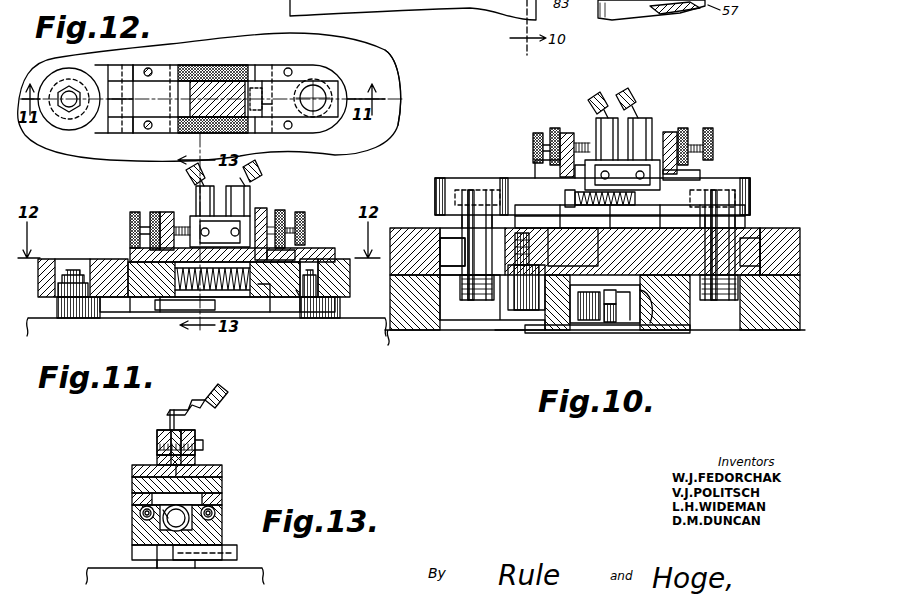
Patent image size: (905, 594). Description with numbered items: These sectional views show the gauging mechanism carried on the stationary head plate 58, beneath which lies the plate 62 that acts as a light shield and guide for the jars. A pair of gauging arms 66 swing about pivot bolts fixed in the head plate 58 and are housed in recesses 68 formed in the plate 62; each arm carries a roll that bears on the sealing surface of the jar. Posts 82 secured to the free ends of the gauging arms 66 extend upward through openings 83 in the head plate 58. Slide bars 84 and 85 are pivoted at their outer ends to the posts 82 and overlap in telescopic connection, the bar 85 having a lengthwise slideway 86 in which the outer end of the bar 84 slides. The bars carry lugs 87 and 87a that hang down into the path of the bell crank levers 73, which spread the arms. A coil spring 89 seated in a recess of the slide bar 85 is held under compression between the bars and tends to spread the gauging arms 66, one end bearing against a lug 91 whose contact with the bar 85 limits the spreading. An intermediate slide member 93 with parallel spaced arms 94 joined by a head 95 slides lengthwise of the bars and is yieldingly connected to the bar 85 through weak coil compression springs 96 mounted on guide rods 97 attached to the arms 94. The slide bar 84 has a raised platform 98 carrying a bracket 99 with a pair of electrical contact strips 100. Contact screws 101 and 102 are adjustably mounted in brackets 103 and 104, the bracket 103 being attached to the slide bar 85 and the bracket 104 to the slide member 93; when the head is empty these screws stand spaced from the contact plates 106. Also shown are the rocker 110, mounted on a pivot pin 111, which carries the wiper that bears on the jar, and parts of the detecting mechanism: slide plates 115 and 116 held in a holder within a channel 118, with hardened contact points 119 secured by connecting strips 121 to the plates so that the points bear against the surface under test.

In FIG. 12, the head plate 58 is at (392, 88).
In FIG. 10, the head plate 58 is at (782, 245).
In FIG. 10, the plate 62 is at (778, 322).
In FIG. 10, the gauging arm 66 is at (470, 305).
In FIG. 10, the recess 68 is at (485, 305).
In FIG. 11, the bell crank lever 73 is at (150, 303).
In FIG. 10, the bell crank lever 73 is at (560, 212).
In FIG. 13, the bell crank lever 73 is at (237, 552).
In FIG. 12, the post 82 is at (328, 90).
In FIG. 11, the post 82 is at (58, 303).
In FIG. 10, the post 82 is at (470, 225).
In FIG. 13, the post 82 is at (178, 560).
In FIG. 10, the opening 83 is at (597, 252).
In FIG. 12, the slide bar 84 is at (57, 122).
In FIG. 11, the slide bar 84 is at (113, 262).
In FIG. 10, the slide bar 84 is at (440, 192).
In FIG. 13, the slide bar 84 is at (135, 477).
In FIG. 12, the slide bar 85 is at (322, 72).
In FIG. 11, the slide bar 85 is at (352, 272).
In FIG. 10, the slide bar 85 is at (752, 195).
In FIG. 13, the slide bar 85 is at (208, 528).
In FIG. 12, the slideway 86 is at (366, 96).
In FIG. 12, the lug 87 is at (130, 99).
In FIG. 11, the lug 87 is at (122, 300).
In FIG. 13, the lug 87 is at (162, 548).
In FIG. 12, the lug 87a is at (264, 73).
In FIG. 11, the lug 87a is at (270, 292).
In FIG. 12, the coil spring 89 is at (250, 99).
In FIG. 11, the coil spring 89 is at (240, 282).
In FIG. 13, the coil spring 89 is at (170, 522).
In FIG. 12, the lug 91 is at (277, 105).
In FIG. 11, the lug 91 is at (287, 296).
In FIG. 12, the intermediate slide member 93 is at (144, 142).
In FIG. 10, the intermediate slide member 93 is at (542, 178).
In FIG. 12, the arm 94 is at (162, 71).
In FIG. 10, the arm 94 is at (588, 178).
In FIG. 13, the arm 94 is at (133, 498).
In FIG. 11, the head 95 is at (172, 298).
In FIG. 12, the coil compression spring 96 is at (232, 56).
In FIG. 10, the coil compression spring 96 is at (632, 205).
In FIG. 13, the coil compression spring 96 is at (140, 512).
In FIG. 10, the guide rod 97 is at (581, 205).
In FIG. 13, the guide rod 97 is at (150, 517).
In FIG. 11, the platform 98 is at (185, 250).
In FIG. 10, the platform 98 is at (622, 171).
In FIG. 13, the platform 98 is at (133, 485).
In FIG. 11, the bracket 99 is at (244, 200).
In FIG. 10, the bracket 99 is at (648, 128).
In FIG. 13, the bracket 99 is at (158, 436).
In FIG. 11, the electrical contact strip 100 is at (208, 200).
In FIG. 10, the electrical contact strip 100 is at (626, 118).
In FIG. 13, the electrical contact strip 100 is at (165, 414).
In FIG. 11, the electrical contact screw 101 is at (262, 216).
In FIG. 10, the electrical contact screw 101 is at (682, 130).
In FIG. 11, the electrical contact screw 102 is at (170, 216).
In FIG. 10, the electrical contact screw 102 is at (570, 135).
In FIG. 11, the bracket 103 is at (290, 252).
In FIG. 10, the bracket 103 is at (690, 176).
In FIG. 11, the bracket 104 is at (162, 215).
In FIG. 10, the bracket 104 is at (572, 130).
In FIG. 11, the contact plate 106 is at (188, 238).
In FIG. 10, the contact plate 106 is at (586, 142).
In FIG. 13, the contact plate 106 is at (178, 428).
In FIG. 10, the rocker 110 is at (510, 292).
In FIG. 10, the pivot pin 111 is at (525, 300).
In FIG. 10, the slide plate 115 is at (622, 318).
In FIG. 10, the slide plate 116 is at (590, 308).
In FIG. 10, the channel 118 is at (647, 318).
In FIG. 10, the contact point 119 is at (608, 320).
In FIG. 10, the connecting strip 121 is at (588, 300).